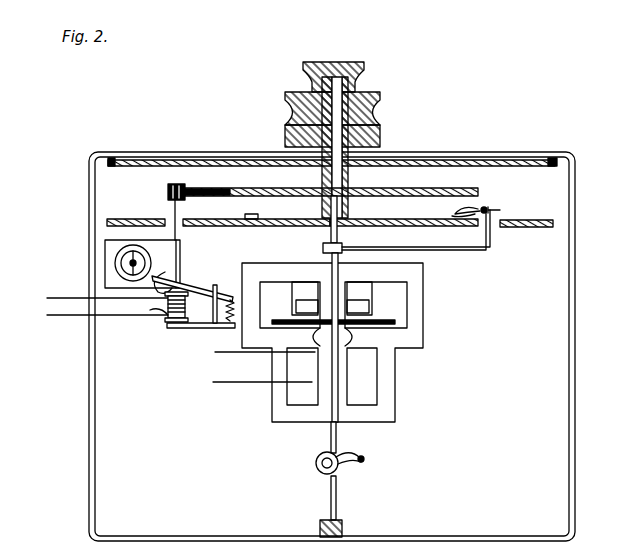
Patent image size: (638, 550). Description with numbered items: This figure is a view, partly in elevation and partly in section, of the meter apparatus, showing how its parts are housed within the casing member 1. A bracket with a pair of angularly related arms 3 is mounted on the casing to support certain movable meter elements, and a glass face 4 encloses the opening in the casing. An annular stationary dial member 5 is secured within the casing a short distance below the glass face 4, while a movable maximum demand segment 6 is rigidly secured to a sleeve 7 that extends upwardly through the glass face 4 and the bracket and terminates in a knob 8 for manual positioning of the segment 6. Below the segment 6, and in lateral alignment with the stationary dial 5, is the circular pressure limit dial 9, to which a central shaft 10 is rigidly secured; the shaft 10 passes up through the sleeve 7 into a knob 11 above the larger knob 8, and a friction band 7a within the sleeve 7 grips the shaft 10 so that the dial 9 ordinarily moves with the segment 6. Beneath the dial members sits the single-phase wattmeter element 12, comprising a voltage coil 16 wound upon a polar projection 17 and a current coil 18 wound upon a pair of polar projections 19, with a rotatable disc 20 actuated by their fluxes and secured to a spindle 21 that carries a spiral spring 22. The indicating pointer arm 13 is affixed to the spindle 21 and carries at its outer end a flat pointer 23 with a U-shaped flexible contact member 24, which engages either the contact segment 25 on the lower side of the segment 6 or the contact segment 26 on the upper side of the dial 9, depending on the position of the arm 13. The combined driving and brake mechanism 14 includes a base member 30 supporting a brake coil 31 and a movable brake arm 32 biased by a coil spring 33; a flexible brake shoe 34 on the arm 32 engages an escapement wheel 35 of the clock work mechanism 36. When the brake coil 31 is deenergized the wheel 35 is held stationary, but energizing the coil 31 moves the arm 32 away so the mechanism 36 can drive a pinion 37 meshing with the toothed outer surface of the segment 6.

The casing member 1 is at (93, 176).
The angularly related arms 3 is at (288, 133).
The glass face 4 is at (133, 160).
The stationary dial member 5 is at (120, 219).
The maximum demand segment 6 is at (232, 188).
The sleeve 7 is at (348, 180).
The friction band 7a is at (327, 198).
The knob 8 is at (370, 96).
The pressure limit dial 9 is at (198, 219).
The shaft 10 is at (338, 208).
The knob 11 is at (348, 62).
The wattmeter element 12 is at (346, 342).
The indicating pointer arm 13 is at (416, 242).
The combined driving and brake mechanism 14 is at (155, 262).
The voltage coil 16 is at (312, 365).
The polar projection 17 is at (338, 392).
The current coil 18 is at (295, 288).
The polar projections 19 is at (320, 293).
The rotatable disc 20 is at (395, 322).
The spindle 21 is at (331, 441).
The spiral spring 22 is at (345, 466).
The flat pointer 23 is at (493, 207).
The flexible contact member 24 is at (458, 209).
The contact segment 25 is at (437, 209).
The contact segment 26 is at (250, 214).
The base member 30 is at (183, 328).
The brake coil 31 is at (165, 308).
The brake arm 32 is at (218, 294).
The coil spring 33 is at (232, 323).
The brake shoe 34 is at (166, 266).
The escapement wheel 35 is at (115, 263).
The clock work mechanism 36 is at (105, 282).
The pinion 37 is at (168, 190).